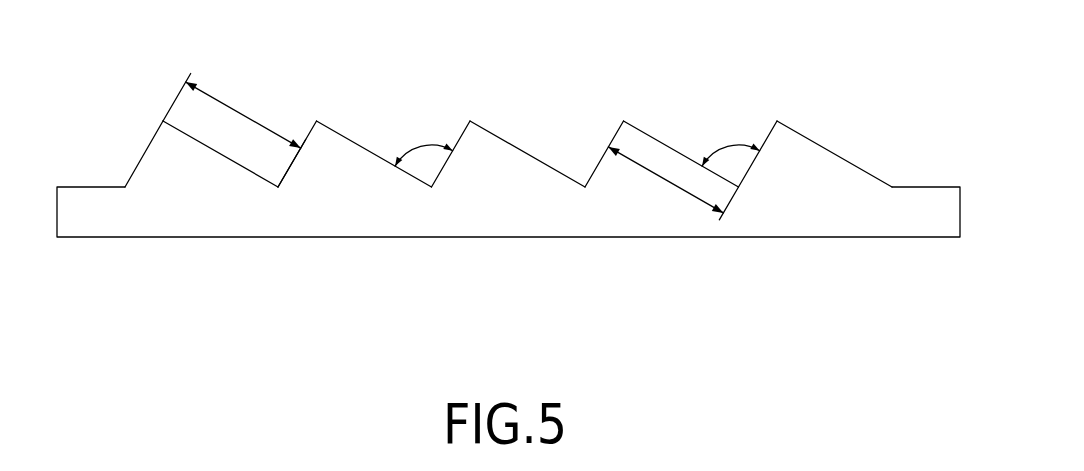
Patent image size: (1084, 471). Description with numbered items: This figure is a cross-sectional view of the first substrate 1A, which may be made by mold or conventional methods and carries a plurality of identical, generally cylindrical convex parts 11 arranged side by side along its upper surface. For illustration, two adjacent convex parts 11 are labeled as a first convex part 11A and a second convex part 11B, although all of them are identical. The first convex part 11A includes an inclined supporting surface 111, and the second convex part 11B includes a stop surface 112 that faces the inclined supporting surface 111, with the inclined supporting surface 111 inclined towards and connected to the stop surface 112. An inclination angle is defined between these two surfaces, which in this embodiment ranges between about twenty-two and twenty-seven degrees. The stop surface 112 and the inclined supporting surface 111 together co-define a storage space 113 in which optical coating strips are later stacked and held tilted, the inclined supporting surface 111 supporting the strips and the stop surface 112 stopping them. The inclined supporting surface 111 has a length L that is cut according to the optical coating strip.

The first substrate 1A is at (157, 252).
The convex part 11 is at (477, 169).
The first convex part 11A is at (320, 132).
The second convex part 11B is at (472, 132).
The inclined supporting surface 111 is at (530, 148).
The stop surface 112 is at (598, 167).
The storage space 113 is at (383, 122).
The length L is at (226, 103).